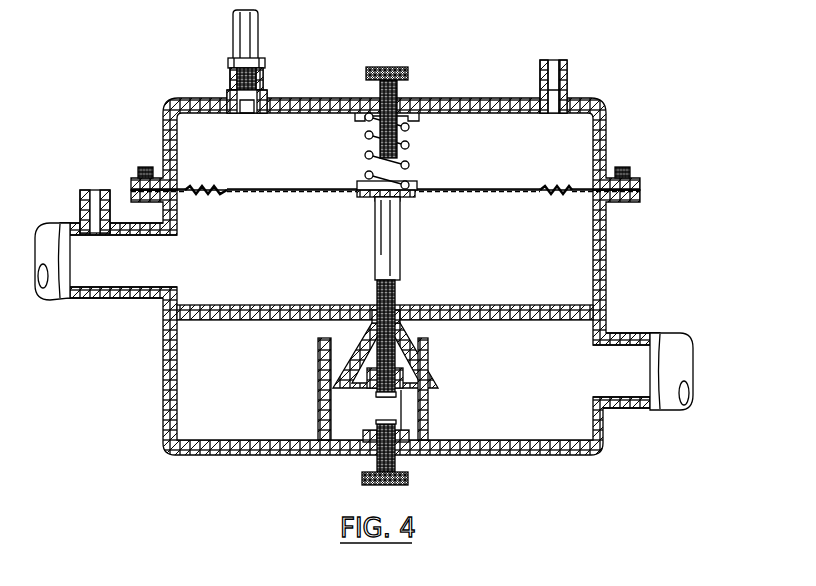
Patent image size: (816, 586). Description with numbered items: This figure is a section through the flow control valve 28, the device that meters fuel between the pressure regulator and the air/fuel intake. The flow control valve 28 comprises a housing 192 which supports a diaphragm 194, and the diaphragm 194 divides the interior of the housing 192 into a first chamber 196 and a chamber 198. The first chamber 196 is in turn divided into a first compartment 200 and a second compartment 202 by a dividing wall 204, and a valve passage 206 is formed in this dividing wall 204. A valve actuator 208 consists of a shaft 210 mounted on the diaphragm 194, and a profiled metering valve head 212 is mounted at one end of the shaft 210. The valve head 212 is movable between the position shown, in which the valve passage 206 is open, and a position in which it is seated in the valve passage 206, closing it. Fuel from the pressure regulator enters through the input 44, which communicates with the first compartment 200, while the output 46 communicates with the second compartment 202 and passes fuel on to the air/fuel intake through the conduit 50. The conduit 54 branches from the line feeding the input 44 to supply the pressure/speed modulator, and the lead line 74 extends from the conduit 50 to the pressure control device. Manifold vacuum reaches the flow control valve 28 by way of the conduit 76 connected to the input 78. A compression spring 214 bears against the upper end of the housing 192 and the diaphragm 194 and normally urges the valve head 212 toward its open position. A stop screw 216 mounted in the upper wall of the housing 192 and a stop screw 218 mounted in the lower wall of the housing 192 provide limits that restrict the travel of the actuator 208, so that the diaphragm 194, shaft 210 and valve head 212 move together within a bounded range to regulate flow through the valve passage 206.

The flow control valve 28 is at (627, 122).
The input 44 is at (632, 373).
The output 46 is at (143, 268).
The conduit 50 is at (53, 237).
The conduit 54 is at (675, 350).
The lead line 74 is at (97, 192).
The conduit 76 is at (567, 68).
The input 78 is at (553, 90).
The housing 192 is at (607, 263).
The diaphragm 194 is at (275, 188).
The first chamber 196 is at (491, 275).
The chamber 198 is at (491, 162).
The first compartment 200 is at (510, 392).
The second compartment 202 is at (557, 251).
The dividing wall 204 is at (545, 312).
The valve passage 206 is at (359, 312).
The valve actuator 208 is at (405, 265).
The shaft 210 is at (378, 223).
The profiled metering valve head 212 is at (355, 347).
The compression spring 214 is at (365, 137).
The stop screw 216 is at (398, 93).
The stop screw 218 is at (377, 460).